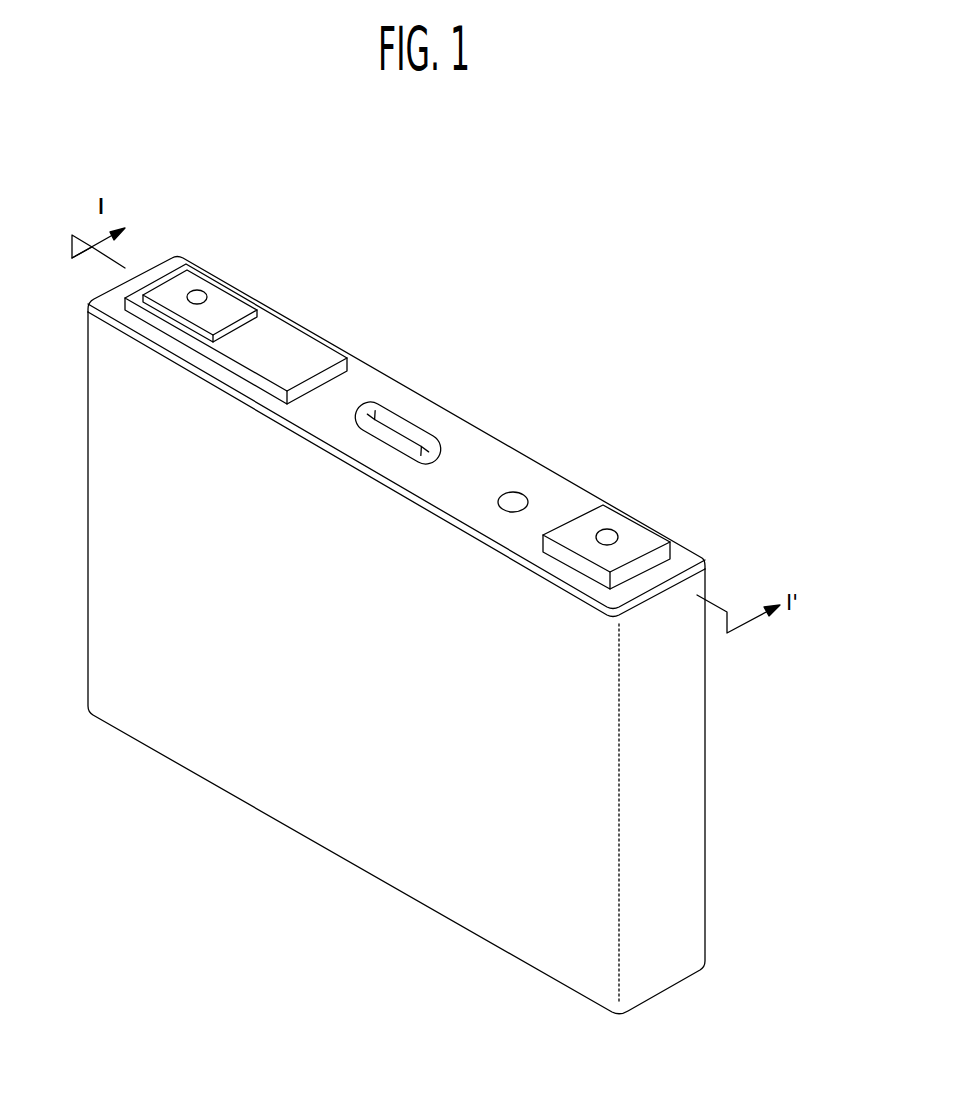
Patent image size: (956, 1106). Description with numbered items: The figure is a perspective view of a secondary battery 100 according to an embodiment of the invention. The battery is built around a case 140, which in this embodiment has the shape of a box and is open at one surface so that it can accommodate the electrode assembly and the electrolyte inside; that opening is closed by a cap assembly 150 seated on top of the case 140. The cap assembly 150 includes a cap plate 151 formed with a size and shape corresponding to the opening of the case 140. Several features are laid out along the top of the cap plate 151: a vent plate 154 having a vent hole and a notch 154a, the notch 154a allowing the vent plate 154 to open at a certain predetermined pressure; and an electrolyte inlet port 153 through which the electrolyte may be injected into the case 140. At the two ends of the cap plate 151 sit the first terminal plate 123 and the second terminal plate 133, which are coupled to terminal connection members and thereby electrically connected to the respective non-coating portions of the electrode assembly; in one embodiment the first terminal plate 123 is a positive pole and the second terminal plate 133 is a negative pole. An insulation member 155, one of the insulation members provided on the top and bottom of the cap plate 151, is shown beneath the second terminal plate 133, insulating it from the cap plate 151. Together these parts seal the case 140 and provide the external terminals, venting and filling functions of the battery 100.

The secondary battery 100 is at (627, 278).
The first terminal plate 123 is at (610, 522).
The second terminal plate 133 is at (227, 303).
The case 140 is at (288, 812).
The cap assembly 150 is at (487, 333).
The cap plate 151 is at (687, 562).
The electrolyte inlet port 153 is at (515, 497).
The vent plate 154 is at (400, 417).
The notch 154a is at (412, 427).
The insulation member 155 is at (295, 347).